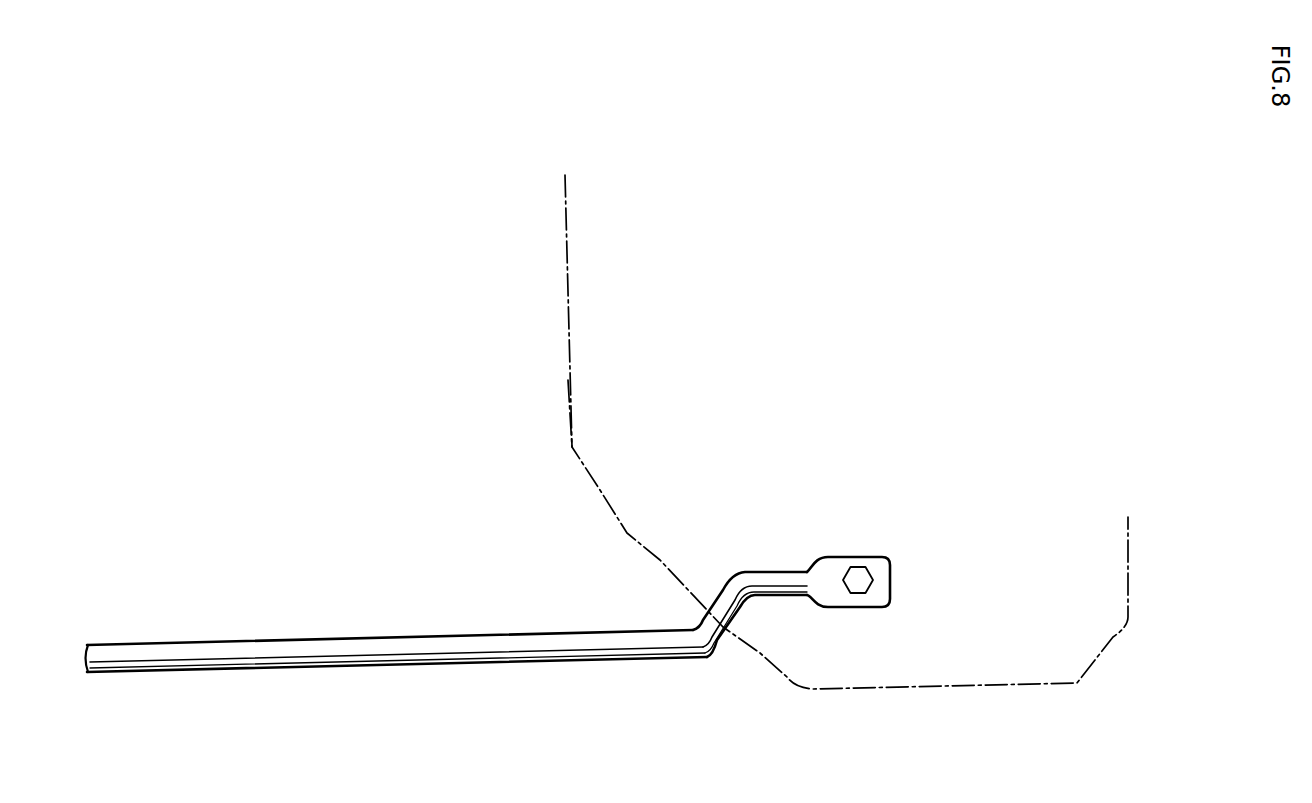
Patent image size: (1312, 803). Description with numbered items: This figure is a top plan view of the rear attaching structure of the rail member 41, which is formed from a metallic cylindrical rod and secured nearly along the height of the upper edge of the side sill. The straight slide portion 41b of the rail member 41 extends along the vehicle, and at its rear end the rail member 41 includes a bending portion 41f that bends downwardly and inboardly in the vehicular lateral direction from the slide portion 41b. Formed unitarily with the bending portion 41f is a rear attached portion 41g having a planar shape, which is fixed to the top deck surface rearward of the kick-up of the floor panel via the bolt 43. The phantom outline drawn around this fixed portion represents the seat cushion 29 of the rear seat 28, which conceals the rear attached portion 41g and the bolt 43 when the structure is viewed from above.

The rear seat 28 is at (565, 408).
The seat cushion 29 is at (571, 324).
The rail member 41 is at (538, 620).
The slide portion 41b is at (232, 668).
The bending portion 41f is at (728, 583).
The rear attached portion 41g is at (893, 573).
The bolt 43 is at (857, 562).